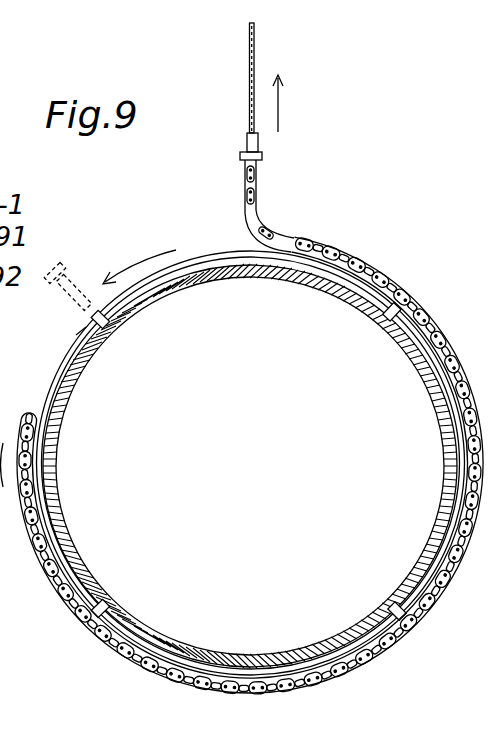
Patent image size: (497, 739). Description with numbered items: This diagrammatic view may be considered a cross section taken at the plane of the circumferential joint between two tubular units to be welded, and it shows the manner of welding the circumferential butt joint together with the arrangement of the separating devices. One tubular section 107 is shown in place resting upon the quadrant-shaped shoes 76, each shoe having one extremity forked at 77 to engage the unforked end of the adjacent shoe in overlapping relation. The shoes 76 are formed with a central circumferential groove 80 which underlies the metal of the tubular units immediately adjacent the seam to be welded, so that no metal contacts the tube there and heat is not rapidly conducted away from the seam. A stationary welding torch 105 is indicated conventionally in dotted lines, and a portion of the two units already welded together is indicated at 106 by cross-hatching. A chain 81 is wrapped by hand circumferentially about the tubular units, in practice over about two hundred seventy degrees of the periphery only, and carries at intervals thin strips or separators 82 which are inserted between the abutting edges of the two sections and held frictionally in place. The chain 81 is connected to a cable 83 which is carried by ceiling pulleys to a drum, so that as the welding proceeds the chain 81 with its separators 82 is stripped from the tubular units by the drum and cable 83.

The shoe 76 is at (184, 272).
The forked extremity 77 is at (108, 328).
The circumferential groove 80 is at (216, 262).
The chain 81 is at (256, 204).
The separators 82 is at (338, 253).
The cable 83 is at (254, 33).
The stationary welding torch 105 is at (79, 262).
The welded portion 106 is at (80, 332).
The tubular section 107 is at (190, 202).